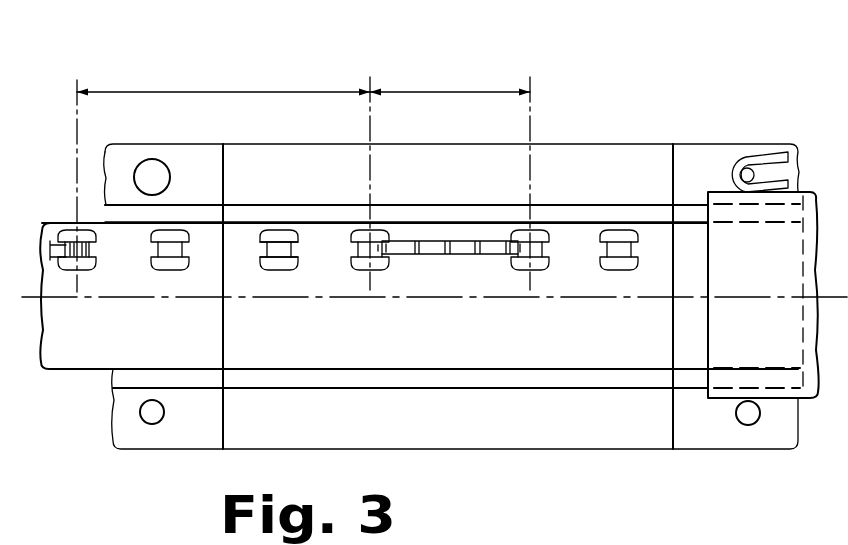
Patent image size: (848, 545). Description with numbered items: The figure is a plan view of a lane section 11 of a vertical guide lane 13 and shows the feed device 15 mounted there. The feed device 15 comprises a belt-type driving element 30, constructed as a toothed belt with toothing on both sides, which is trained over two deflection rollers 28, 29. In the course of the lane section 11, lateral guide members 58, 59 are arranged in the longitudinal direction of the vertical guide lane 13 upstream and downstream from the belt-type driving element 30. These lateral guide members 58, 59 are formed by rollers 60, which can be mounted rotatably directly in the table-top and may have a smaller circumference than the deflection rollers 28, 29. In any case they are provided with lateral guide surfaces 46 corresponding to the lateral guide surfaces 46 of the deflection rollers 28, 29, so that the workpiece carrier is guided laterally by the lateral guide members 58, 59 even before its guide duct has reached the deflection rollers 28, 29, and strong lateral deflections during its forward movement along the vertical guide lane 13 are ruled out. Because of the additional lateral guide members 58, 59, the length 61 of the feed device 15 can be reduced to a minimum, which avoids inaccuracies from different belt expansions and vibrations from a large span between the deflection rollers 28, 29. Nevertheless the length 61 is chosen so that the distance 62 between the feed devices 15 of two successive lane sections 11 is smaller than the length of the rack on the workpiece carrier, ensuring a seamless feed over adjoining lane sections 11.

The lane section 11 is at (166, 458).
The vertical guide lane 13 is at (592, 212).
The feed device 15 is at (58, 218).
The deflection roller 28 is at (530, 270).
The deflection roller 29 is at (362, 268).
The belt-type driving element 30 is at (434, 262).
The lateral guide surface 46 is at (286, 230).
The lateral guide member 58 is at (302, 226).
The lateral guide member 59 is at (632, 212).
The roller 60 is at (276, 270).
The length of the feed device 61 is at (433, 87).
The distance between successive feed devices 62 is at (203, 88).